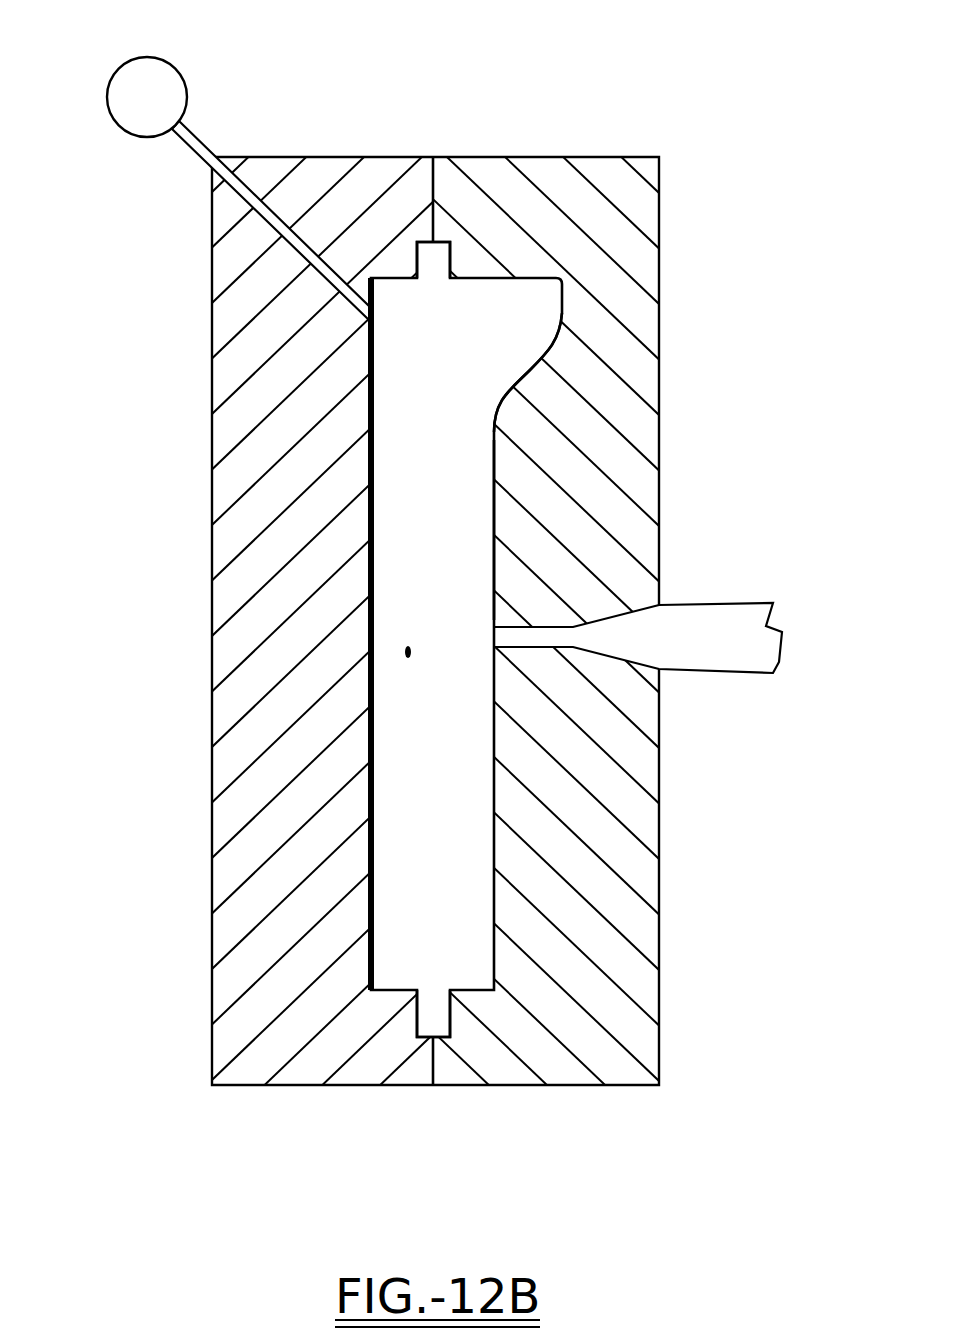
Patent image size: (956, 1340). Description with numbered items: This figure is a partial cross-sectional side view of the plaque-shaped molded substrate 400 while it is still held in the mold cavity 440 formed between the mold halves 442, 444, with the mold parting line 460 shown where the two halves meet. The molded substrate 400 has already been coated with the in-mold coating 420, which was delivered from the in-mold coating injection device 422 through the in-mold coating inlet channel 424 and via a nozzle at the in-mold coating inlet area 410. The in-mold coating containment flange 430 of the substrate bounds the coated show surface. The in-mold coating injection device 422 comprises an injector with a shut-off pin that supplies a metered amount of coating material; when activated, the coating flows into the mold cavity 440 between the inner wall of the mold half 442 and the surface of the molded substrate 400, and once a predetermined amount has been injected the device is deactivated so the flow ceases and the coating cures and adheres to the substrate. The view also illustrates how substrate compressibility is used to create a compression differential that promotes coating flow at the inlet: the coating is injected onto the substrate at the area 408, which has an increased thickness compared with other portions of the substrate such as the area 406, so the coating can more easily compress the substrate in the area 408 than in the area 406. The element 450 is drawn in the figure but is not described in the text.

The molded substrate 400 is at (463, 562).
The area of the substrate 406 is at (506, 507).
The area of increased thickness 408 is at (566, 331).
The in-mold coating inlet area 410 is at (374, 316).
The in-mold coating 420 is at (374, 432).
The in-mold coating injection device 422 is at (178, 14).
The in-mold coating inlet channel 424 is at (278, 227).
The in-mold coating containment flange 430 is at (452, 256).
The mold cavity 440 is at (408, 655).
The mold half 442 is at (202, 475).
The mold half 444 is at (670, 472).
The injection nozzle 450 is at (726, 603).
The mold parting line 460 is at (432, 169).